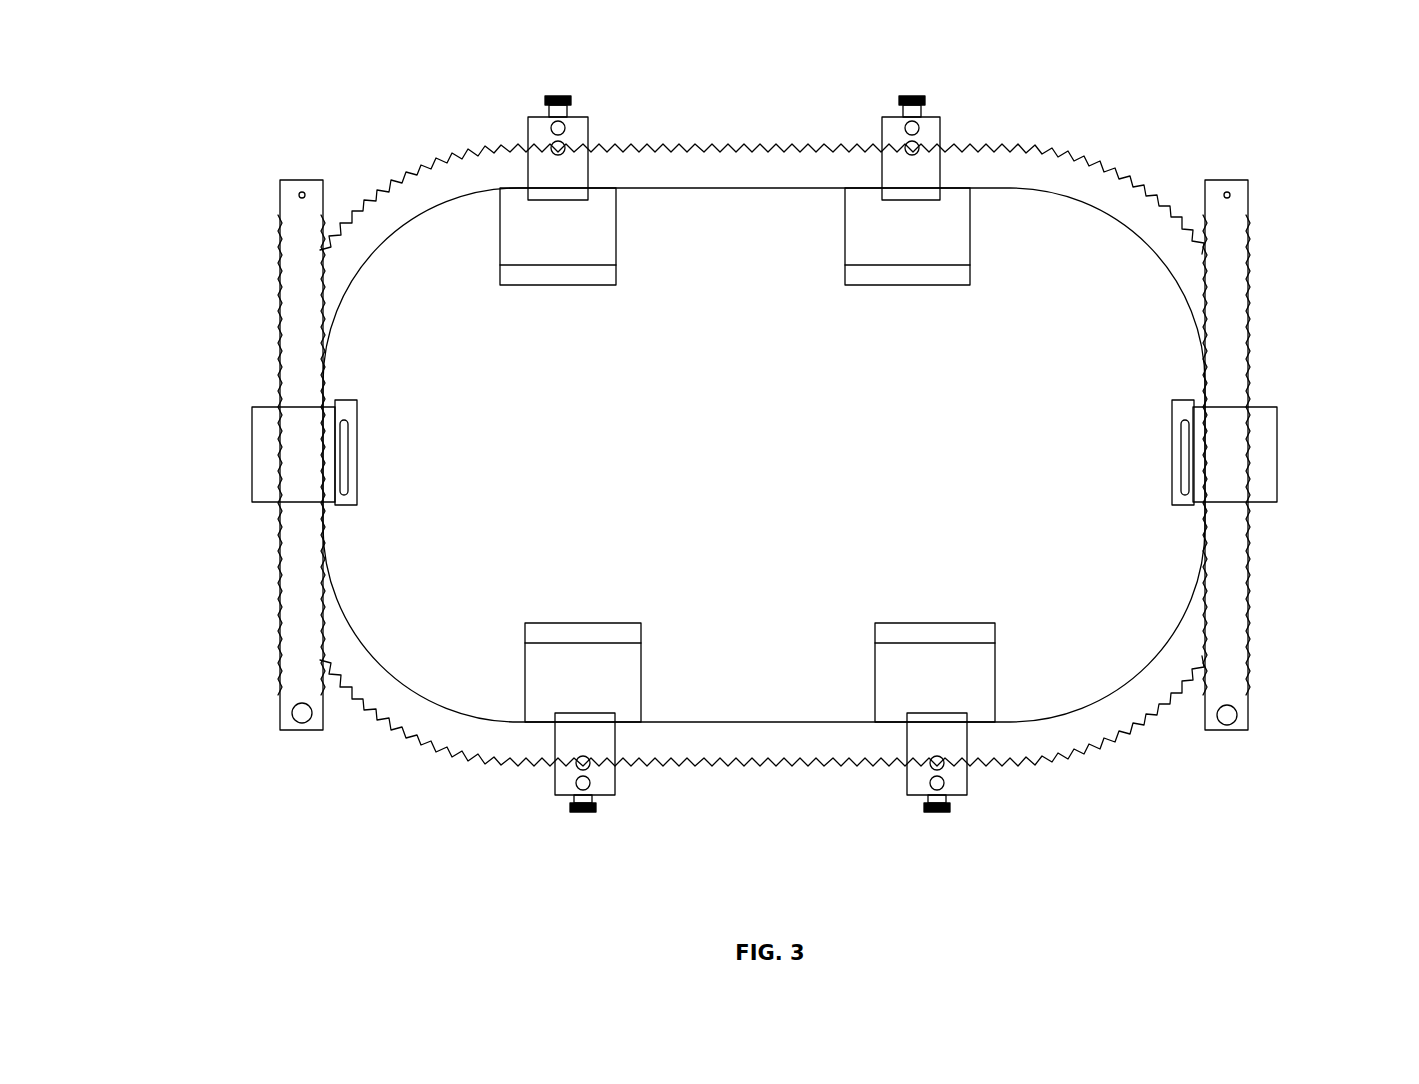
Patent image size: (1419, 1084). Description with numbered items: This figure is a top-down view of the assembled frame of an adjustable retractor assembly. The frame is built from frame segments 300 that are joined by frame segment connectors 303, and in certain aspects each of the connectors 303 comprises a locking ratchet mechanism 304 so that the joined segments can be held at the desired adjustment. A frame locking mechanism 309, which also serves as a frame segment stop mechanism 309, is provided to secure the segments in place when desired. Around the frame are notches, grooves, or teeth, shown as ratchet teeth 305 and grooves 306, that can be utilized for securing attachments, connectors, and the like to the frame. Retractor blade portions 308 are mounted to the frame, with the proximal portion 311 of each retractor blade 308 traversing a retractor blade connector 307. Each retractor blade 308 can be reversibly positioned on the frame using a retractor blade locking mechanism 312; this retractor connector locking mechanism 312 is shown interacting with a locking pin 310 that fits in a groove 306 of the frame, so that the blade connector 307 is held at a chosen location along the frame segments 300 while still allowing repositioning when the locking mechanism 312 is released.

The frame segments 300 is at (447, 180).
The frame segment connectors 303 is at (273, 458).
The locking ratchet mechanism 304 is at (350, 435).
The ratchet teeth 305 is at (1200, 612).
The groove 306 is at (1110, 734).
The retractor blade connector 307 is at (541, 125).
The retractor blade 308 is at (603, 258).
The frame locking mechanism 309 is at (303, 713).
The locking pin 310 is at (558, 148).
The proximal portion of the retractor blade 311 is at (558, 128).
The retractor blade locking mechanism 312 is at (558, 95).